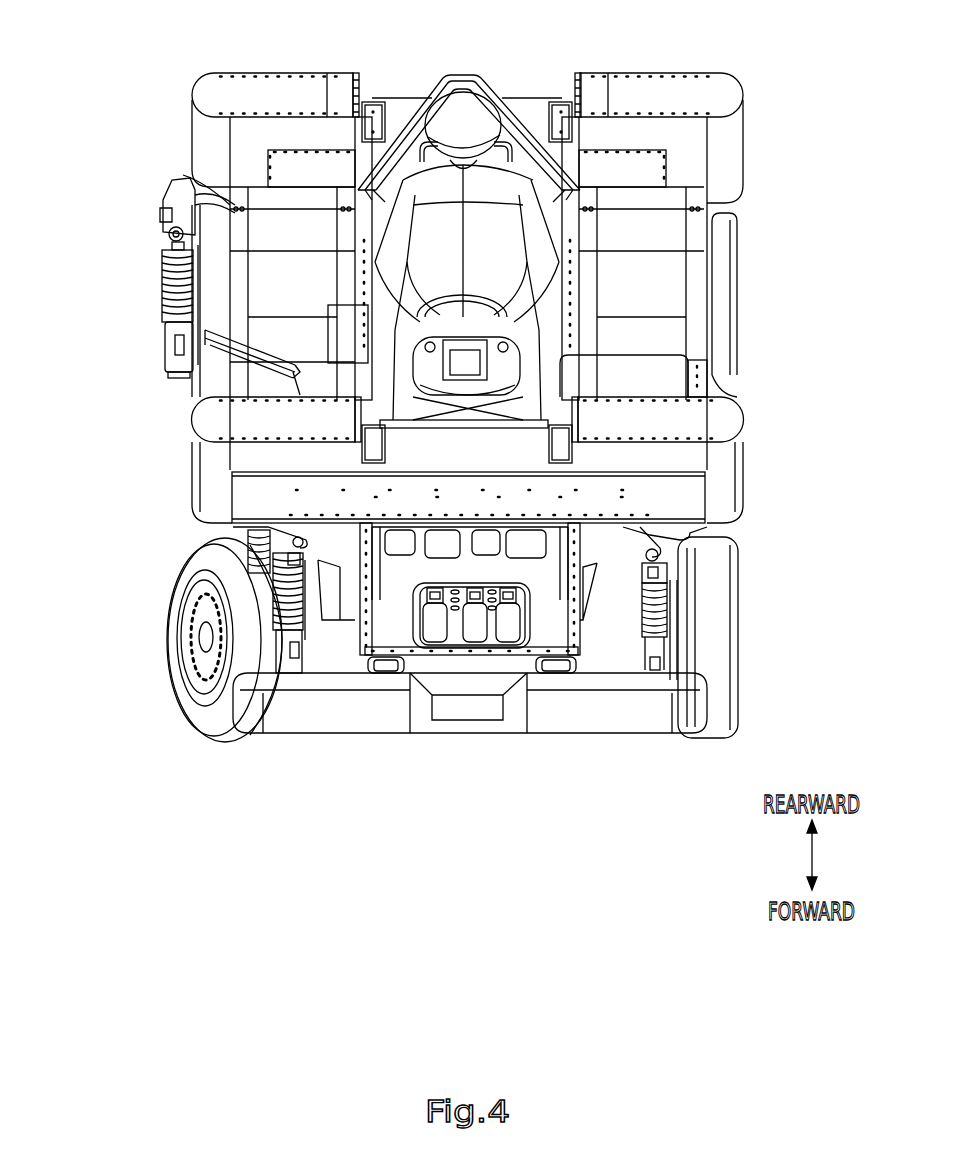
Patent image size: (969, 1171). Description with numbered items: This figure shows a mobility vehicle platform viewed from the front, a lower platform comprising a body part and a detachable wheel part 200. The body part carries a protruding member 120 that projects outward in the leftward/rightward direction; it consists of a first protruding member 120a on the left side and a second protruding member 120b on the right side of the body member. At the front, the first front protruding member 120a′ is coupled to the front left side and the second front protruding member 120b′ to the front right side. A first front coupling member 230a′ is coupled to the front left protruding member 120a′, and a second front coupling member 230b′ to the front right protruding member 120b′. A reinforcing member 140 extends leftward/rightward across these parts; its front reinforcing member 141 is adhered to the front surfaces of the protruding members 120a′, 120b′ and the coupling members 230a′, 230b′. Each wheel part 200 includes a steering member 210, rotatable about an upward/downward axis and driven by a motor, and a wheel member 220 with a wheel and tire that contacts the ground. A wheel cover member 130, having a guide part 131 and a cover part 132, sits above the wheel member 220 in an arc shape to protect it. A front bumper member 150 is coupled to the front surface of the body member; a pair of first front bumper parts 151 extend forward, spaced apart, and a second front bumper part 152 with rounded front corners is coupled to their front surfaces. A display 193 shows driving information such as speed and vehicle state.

The (2-1)-th coupling member 230b′ is at (213, 422).
The (1-1)-th coupling member 230a′ is at (722, 422).
The wheel cover member 130 is at (126, 278).
The guide part 131 is at (168, 236).
The cover part 132 is at (170, 292).
The display 193 is at (218, 373).
The reinforcing member 140 is at (584, 497).
The front reinforcing member 141 is at (690, 496).
The wheel part 200 is at (729, 632).
The steering member 210 is at (665, 540).
The wheel member 220 is at (713, 630).
The (2-1)-th protruding member 120b′ is at (342, 567).
The (1-1)-th protruding member 120a′ is at (595, 563).
The second protruding member 120b is at (304, 798).
The first protruding member 120a is at (633, 798).
The protruding member 120 is at (552, 942).
The front bumper member 150 is at (471, 721).
The first front bumper part 151 is at (555, 729).
The second front bumper part 152 is at (397, 680).